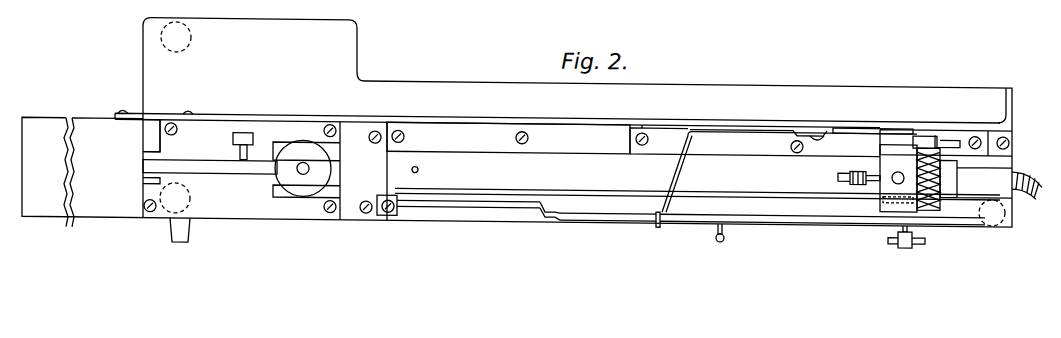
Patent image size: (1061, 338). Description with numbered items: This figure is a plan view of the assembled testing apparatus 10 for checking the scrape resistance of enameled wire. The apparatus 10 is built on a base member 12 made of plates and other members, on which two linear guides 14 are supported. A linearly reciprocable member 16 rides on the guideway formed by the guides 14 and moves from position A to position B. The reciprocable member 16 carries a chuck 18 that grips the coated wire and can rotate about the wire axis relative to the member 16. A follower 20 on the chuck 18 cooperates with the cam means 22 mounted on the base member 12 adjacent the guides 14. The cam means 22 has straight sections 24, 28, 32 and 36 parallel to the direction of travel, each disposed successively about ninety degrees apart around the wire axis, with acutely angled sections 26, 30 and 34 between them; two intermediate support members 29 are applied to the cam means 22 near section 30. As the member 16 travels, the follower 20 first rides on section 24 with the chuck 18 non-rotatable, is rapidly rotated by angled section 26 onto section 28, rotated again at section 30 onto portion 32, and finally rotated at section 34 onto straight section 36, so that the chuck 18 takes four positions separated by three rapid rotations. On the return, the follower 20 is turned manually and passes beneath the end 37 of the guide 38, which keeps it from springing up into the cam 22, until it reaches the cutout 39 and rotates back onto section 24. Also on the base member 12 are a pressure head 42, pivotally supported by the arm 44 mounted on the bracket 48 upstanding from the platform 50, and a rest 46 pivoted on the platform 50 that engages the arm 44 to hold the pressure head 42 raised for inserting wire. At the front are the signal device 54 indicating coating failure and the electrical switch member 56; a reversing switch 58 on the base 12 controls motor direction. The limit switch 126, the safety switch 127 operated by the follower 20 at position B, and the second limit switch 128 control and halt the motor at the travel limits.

The testing apparatus 10 is at (551, 274).
The base member 12 is at (120, 215).
The linear guides 14 is at (393, 188).
The linearly reciprocable member 16 is at (923, 127).
The chuck 18 is at (853, 176).
The follower 20 is at (933, 127).
The cam means 22 is at (735, 127).
The cam section 24 is at (478, 200).
The angled section 26 is at (557, 204).
The cam section 28 is at (603, 206).
The intermediate support members 29 is at (705, 122).
The angled section 30 is at (672, 158).
The cam portion 32 is at (770, 129).
The angled section 34 is at (808, 128).
The straight section 36 is at (853, 126).
The end of guide 37 is at (897, 194).
The guide 38 is at (783, 196).
The cutout 39 is at (420, 191).
The pressure head 42 is at (300, 189).
The arm 44 is at (258, 169).
The rest 46 is at (253, 140).
The bracket 48 is at (150, 137).
The platform 50 is at (312, 205).
The signal device 54 is at (172, 230).
The electrical switch member 56 is at (712, 243).
The reversing switch 58 is at (920, 238).
The limit switch 126 is at (950, 170).
The safety switch 127 is at (902, 150).
The second limit switch 128 is at (419, 165).